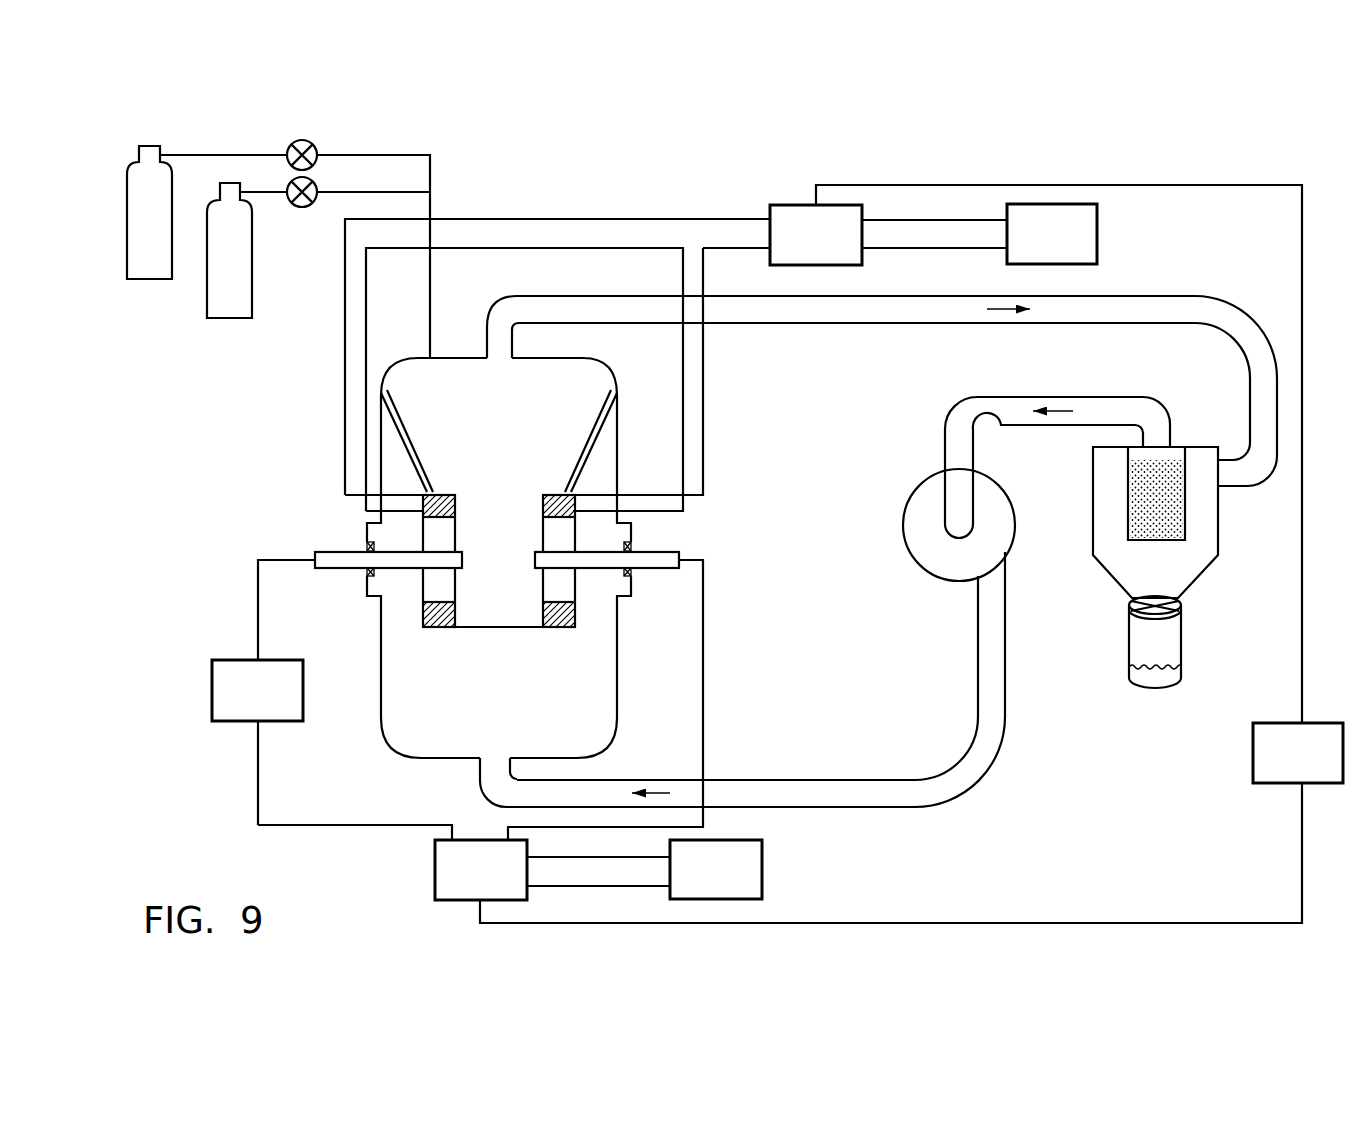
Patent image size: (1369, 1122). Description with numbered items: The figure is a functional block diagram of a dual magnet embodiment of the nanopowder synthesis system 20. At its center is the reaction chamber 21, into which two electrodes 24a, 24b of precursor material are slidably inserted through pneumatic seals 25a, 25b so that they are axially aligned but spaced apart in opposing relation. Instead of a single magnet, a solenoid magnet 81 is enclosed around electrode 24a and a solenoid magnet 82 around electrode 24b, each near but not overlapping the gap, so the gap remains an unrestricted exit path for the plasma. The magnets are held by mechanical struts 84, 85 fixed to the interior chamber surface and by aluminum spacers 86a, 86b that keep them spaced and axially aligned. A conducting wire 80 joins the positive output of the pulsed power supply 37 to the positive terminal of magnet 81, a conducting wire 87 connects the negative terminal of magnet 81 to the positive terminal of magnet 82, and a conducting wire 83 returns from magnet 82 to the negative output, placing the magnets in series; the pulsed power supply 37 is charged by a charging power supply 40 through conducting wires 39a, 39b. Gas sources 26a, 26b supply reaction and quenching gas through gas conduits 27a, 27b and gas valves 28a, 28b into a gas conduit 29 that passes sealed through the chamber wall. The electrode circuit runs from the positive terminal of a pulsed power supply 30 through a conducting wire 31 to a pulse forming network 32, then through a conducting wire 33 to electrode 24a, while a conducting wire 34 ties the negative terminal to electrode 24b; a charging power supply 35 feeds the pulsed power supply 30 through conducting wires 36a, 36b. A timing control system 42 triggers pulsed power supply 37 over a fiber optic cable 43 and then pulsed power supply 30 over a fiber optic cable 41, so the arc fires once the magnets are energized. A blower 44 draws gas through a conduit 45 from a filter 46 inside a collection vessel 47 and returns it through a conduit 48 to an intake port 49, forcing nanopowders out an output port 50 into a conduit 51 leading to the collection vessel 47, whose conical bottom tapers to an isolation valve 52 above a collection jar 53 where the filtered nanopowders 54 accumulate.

The nanopowder synthesis system 20 is at (208, 793).
The reaction chamber 21 is at (616, 363).
The electrode 24a is at (318, 540).
The electrode 24b is at (680, 548).
The pneumatic seal 25a is at (363, 572).
The pneumatic seal 25b is at (630, 576).
The gas source 26a is at (150, 257).
The gas source 26b is at (230, 305).
The gas conduit 27a is at (180, 155).
The gas conduit 27b is at (262, 192).
The gas valve 28a is at (317, 148).
The gas valve 28b is at (287, 204).
The gas conduit 29 is at (432, 303).
The pulsed power supply 30 is at (440, 870).
The conducting wire 31 is at (290, 823).
The pulse forming network 32 is at (212, 694).
The conducting wire 33 is at (258, 598).
The conducting wire 34 is at (703, 718).
The charging power supply 35 is at (762, 871).
The conducting wire 36a is at (583, 857).
The conducting wire 36b is at (562, 886).
The pulsed power supply 37 is at (783, 210).
The conducting wire 39a is at (913, 220).
The conducting wire 39b is at (915, 248).
The charging power supply 40 is at (1098, 232).
The fiber optic cable 41 is at (948, 923).
The timing control system 42 is at (1280, 722).
The fiber optic cable 43 is at (1302, 310).
The blower 44 is at (912, 516).
The conduit 45 is at (1087, 403).
The filter 46 is at (1140, 527).
The collection vessel 47 is at (1205, 447).
The conduit 48 is at (1002, 737).
The intake port 49 is at (499, 752).
The output port 50 is at (501, 345).
The conduit 51 is at (1112, 297).
The isolation valve 52 is at (1161, 600).
The collection jar 53 is at (1170, 635).
The collected nanopowders 54 is at (1155, 680).
The conducting wire 80 is at (589, 218).
The solenoid magnet 81 is at (443, 630).
The solenoid magnet 82 is at (550, 630).
The conducting wire 83 is at (722, 249).
The mechanical strut 84 is at (411, 416).
The mechanical strut 85 is at (584, 416).
The aluminum spacer 86a is at (490, 483).
The aluminum spacer 86b is at (497, 630).
The conducting wire 87 is at (630, 248).